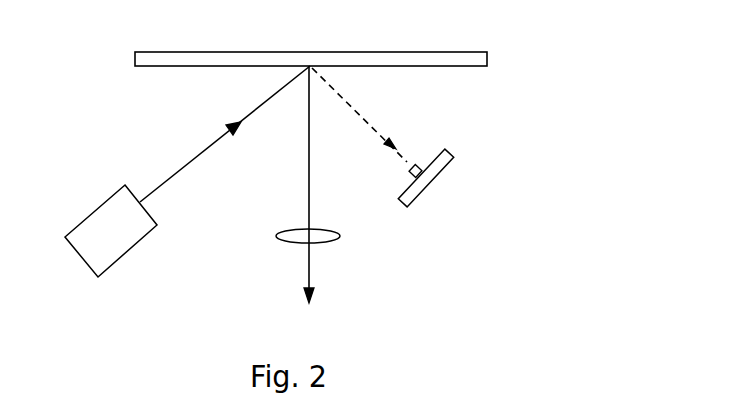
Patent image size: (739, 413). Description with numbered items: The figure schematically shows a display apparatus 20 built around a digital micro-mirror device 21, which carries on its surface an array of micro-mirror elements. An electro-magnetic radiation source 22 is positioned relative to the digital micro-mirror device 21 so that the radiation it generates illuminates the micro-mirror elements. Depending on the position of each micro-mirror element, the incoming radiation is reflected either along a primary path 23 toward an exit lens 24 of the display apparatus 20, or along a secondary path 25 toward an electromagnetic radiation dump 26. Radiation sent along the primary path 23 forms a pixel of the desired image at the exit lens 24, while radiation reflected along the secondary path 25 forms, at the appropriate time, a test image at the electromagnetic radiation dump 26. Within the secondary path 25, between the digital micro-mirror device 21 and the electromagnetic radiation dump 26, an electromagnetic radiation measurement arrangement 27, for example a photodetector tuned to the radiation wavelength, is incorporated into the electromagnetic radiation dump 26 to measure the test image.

The display apparatus 20 is at (561, 64).
The digital micro-mirror device 21 is at (485, 62).
The electro-magnetic radiation source 22 is at (97, 207).
The primary path 23 is at (306, 272).
The exit lens 24 is at (338, 237).
The secondary path 25 is at (397, 141).
The electromagnetic radiation dump 26 is at (432, 177).
The electromagnetic radiation measurement arrangement 27 is at (408, 172).